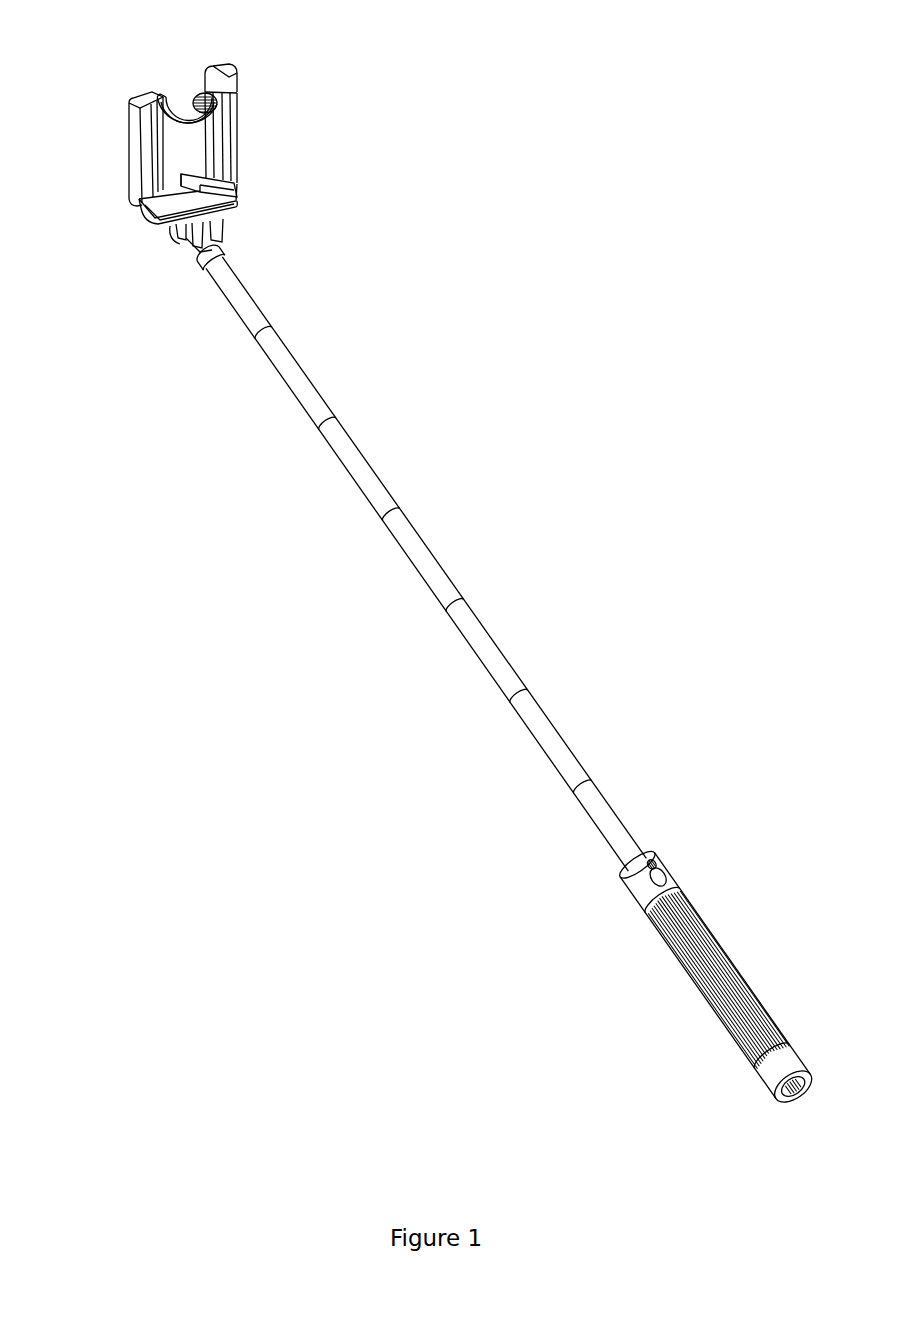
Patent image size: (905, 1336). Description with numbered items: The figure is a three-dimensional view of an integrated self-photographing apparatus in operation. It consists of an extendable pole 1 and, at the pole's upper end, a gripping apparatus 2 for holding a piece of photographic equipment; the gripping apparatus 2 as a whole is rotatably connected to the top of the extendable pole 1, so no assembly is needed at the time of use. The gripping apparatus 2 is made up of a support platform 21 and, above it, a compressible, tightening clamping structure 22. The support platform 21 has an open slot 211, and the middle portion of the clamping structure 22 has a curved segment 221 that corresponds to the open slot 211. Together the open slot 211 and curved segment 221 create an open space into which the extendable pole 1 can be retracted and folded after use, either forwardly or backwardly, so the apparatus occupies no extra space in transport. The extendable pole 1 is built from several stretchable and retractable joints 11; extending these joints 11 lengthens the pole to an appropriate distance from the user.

The extendable pole 1 is at (539, 653).
The stretchable and retractable joints 11 is at (369, 469).
The gripping apparatus 2 is at (350, 161).
The support platform 21 is at (189, 205).
The open slot 211 is at (162, 178).
The clamping structure 22 is at (226, 96).
The curved segment 221 is at (177, 99).